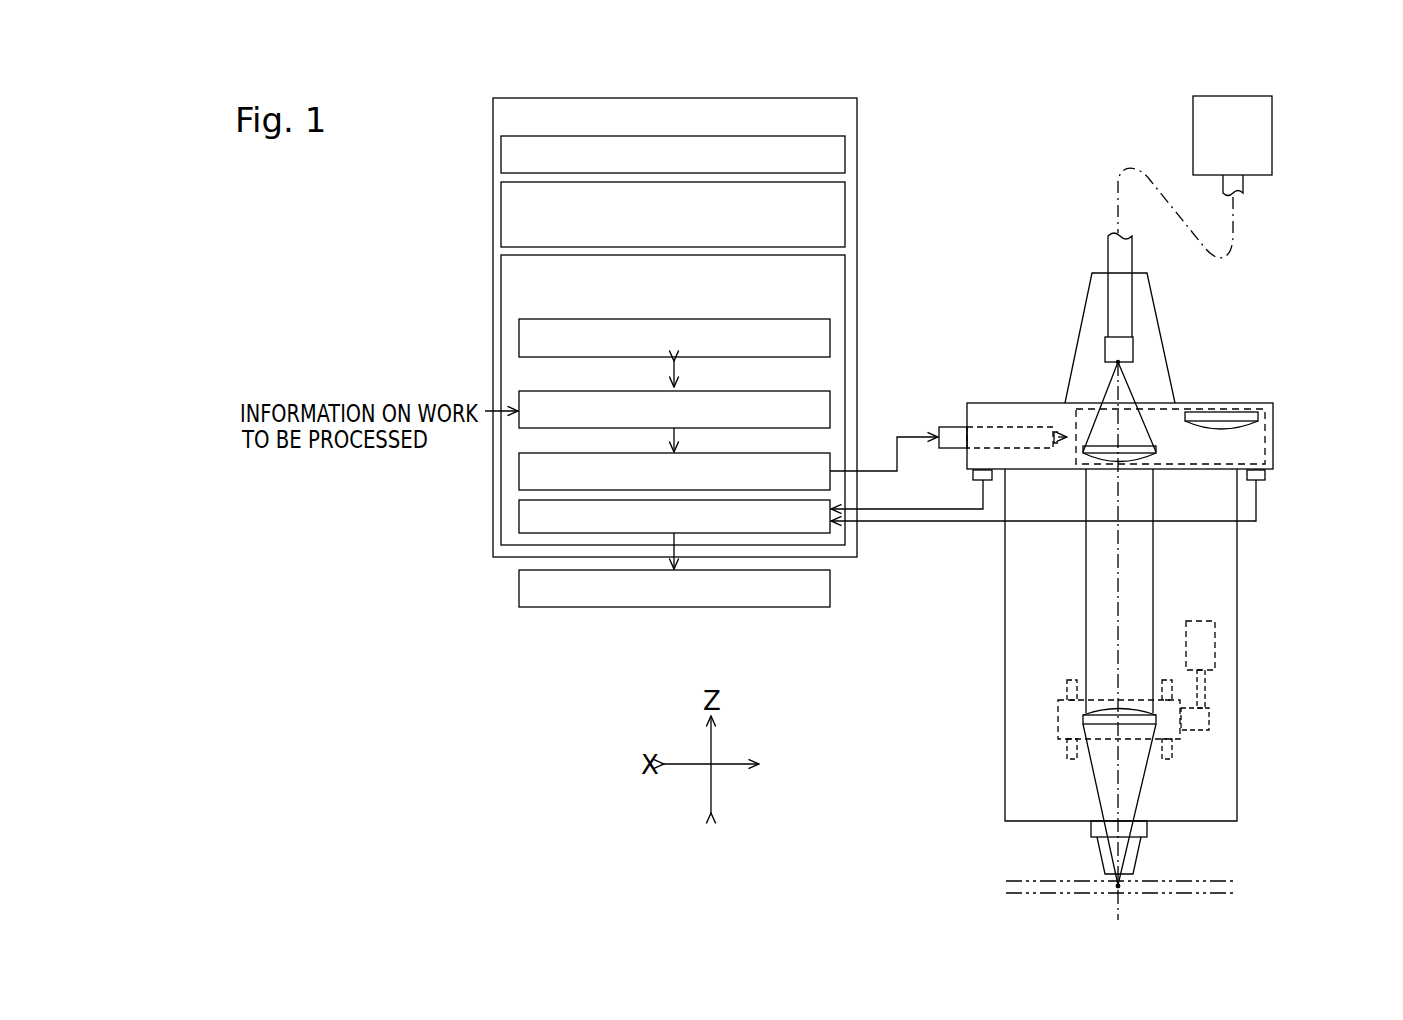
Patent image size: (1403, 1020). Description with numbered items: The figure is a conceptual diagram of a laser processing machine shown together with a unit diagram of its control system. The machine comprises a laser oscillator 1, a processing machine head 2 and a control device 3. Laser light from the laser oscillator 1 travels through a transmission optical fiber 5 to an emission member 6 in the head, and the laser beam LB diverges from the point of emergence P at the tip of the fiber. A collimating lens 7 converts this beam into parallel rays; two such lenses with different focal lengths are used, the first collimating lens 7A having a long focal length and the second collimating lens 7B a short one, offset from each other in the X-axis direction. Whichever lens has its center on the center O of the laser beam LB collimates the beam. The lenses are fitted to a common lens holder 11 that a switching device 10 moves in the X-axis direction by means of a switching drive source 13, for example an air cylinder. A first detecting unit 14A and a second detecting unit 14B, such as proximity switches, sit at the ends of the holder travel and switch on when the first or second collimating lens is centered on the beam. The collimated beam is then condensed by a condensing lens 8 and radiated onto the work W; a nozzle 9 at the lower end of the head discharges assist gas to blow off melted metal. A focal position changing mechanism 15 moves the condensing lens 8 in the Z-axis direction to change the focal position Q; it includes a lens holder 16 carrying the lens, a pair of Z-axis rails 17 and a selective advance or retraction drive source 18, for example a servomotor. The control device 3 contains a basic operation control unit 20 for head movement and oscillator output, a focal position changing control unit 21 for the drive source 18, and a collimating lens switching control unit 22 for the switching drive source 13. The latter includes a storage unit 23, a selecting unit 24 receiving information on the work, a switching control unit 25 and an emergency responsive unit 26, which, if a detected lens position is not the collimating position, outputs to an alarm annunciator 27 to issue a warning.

The laser oscillator 1 is at (1193, 130).
The processing machine head 2 is at (1238, 569).
The control device 3 is at (857, 115).
The transmission optical fiber 5 is at (1108, 255).
The emission member 6 is at (1105, 347).
The collimating lens 7 is at (1188, 375).
The first collimating lens 7A is at (1153, 452).
The second collimating lens 7B is at (1210, 412).
The condensing lens 8 is at (1083, 720).
The nozzle 9 is at (1097, 850).
The switching device 10 is at (1005, 400).
The lens holder 11 is at (1270, 418).
The switching drive source 13 is at (952, 427).
The first detecting unit 14A is at (973, 475).
The second detecting unit 14B is at (1258, 480).
The focal position changing mechanism 15 is at (1216, 685).
The lens holder 16 is at (1155, 745).
The Z-axis rails 17 is at (1067, 749).
The selective advance or retraction drive source 18 is at (1215, 650).
The basic operation control unit 20 is at (501, 152).
The focal position changing control unit 21 is at (501, 213).
The collimating lens switching control unit 22 is at (501, 285).
The storage unit 23 is at (830, 337).
The selecting unit 24 is at (830, 410).
The switching control unit 25 is at (519, 474).
The emergency responsive unit 26 is at (519, 521).
The alarm annunciator 27 is at (533, 592).
The point of emergence P is at (1116, 363).
The center of the laser beam O is at (1118, 638).
The laser beam LB is at (1086, 600).
The work to be processed W is at (1020, 881).
The focal position Q is at (1118, 887).